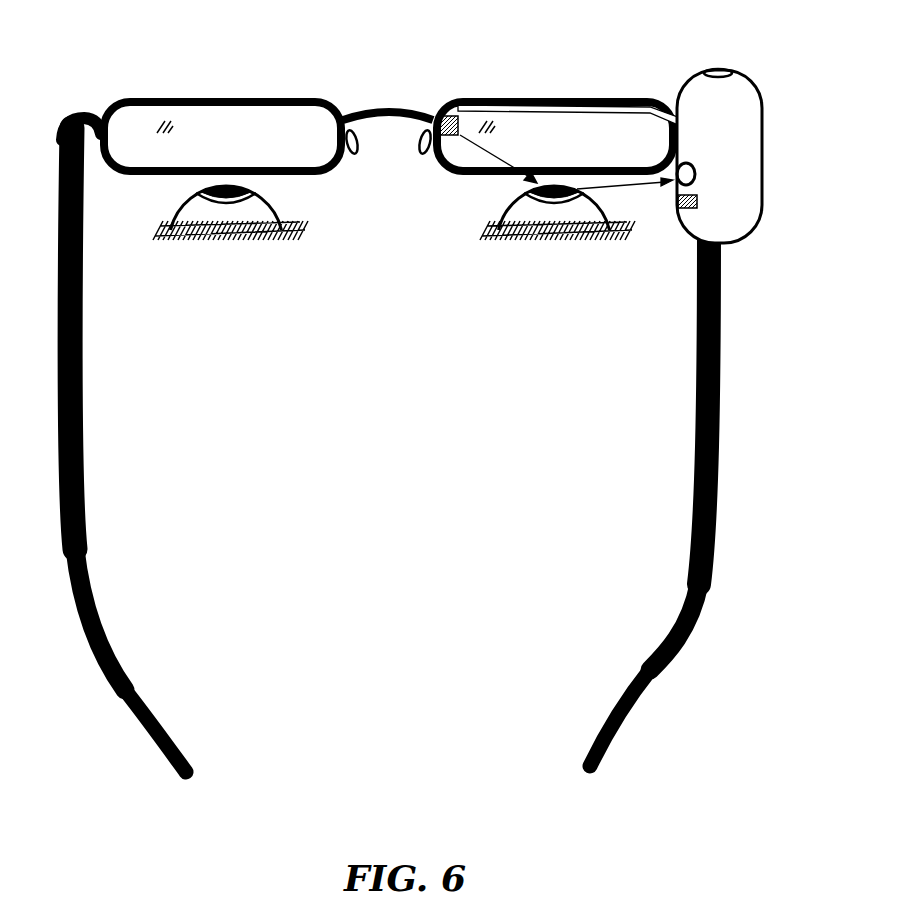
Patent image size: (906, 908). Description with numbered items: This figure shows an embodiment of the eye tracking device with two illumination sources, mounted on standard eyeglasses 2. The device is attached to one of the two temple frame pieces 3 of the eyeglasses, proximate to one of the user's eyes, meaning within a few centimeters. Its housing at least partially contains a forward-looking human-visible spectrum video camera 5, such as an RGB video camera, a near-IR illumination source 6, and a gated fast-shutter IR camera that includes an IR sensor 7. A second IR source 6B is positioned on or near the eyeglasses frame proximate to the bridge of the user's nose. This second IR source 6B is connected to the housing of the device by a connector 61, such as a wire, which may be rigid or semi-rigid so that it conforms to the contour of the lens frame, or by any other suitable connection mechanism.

The eyeglasses 2 is at (108, 83).
The temple frame piece 3 is at (720, 452).
The forward-looking human-visible spectrum video camera 5 is at (724, 70).
The near-IR illumination source 6 is at (697, 201).
The second IR source 6B is at (457, 115).
The connector 61 is at (556, 113).
The IR sensor 7 is at (696, 174).